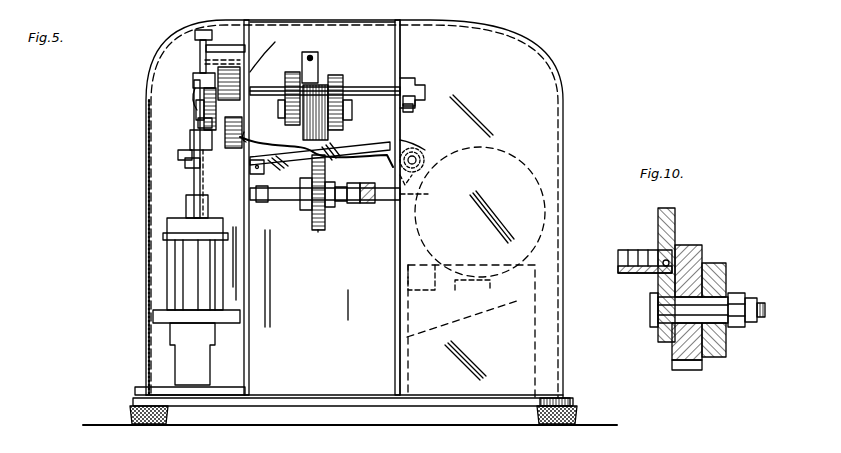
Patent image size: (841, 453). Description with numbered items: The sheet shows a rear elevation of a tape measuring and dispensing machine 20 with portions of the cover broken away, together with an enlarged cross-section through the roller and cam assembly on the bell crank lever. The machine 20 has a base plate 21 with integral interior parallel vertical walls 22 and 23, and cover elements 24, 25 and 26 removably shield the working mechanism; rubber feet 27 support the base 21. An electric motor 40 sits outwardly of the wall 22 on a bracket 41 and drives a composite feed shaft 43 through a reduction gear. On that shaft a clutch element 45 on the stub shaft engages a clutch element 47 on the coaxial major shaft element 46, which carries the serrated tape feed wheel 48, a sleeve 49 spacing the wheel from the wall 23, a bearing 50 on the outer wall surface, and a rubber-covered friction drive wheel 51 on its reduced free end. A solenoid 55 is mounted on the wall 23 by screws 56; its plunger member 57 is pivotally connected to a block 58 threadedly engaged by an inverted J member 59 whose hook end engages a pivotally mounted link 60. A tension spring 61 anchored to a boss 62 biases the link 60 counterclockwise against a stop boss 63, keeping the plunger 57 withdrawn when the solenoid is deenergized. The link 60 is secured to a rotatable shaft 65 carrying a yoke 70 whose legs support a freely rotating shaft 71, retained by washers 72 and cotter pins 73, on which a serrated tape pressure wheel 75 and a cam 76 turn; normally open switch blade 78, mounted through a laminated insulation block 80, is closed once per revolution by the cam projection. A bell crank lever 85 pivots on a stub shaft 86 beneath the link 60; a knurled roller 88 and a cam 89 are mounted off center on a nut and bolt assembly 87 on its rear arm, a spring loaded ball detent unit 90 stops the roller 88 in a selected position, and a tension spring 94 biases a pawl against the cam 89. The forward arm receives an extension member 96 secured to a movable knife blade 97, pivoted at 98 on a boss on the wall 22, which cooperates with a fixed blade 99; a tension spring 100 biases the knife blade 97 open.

In FIG. 5, the machine 20 is at (105, 285).
In FIG. 5, the base plate 21 is at (520, 395).
In FIG. 5, the vertical wall 22 is at (400, 62).
In FIG. 5, the vertical wall 23 is at (250, 358).
In FIG. 5, the cover element 24 is at (545, 92).
In FIG. 5, the cover element 25 is at (385, 36).
In FIG. 5, the cover element 26 is at (146, 177).
In FIG. 5, the rubber feet 27 is at (133, 403).
In FIG. 5, the electric motor 40 is at (535, 173).
In FIG. 5, the bracket 41 is at (488, 300).
In FIG. 5, the composite feed shaft 43 is at (350, 215).
In FIG. 5, the clutch element 45 is at (412, 196).
In FIG. 5, the major shaft element 46 is at (333, 207).
In FIG. 5, the clutch element 47 is at (355, 205).
In FIG. 5, the tape feed wheel 48 is at (320, 232).
In FIG. 5, the sleeve 49 is at (312, 205).
In FIG. 5, the bearing 50 is at (200, 198).
In FIG. 5, the friction drive wheel 51 is at (248, 210).
In FIG. 5, the solenoid 55 is at (178, 256).
In FIG. 5, the screws 56 is at (236, 285).
In FIG. 5, the plunger member 57 is at (186, 207).
In FIG. 5, the block 58 is at (190, 138).
In FIG. 5, the inverted J member 59 is at (192, 96).
In FIG. 5, the link 60 is at (193, 80).
In FIG. 5, the tension spring 61 is at (206, 48).
In FIG. 5, the boss 62 is at (197, 36).
In FIG. 5, the stop boss 63 is at (205, 62).
In FIG. 5, the rotatable shaft 65 is at (385, 80).
In FIG. 5, the yoke 70 is at (335, 75).
In FIG. 5, the shaft 71 is at (352, 110).
In FIG. 5, the washers 72 is at (341, 97).
In FIG. 5, the cotter pins 73 is at (378, 125).
In FIG. 5, the tape pressure wheel 75 is at (283, 165).
In FIG. 5, the cam 76 is at (292, 100).
In FIG. 5, the switch blade 78 is at (318, 62).
In FIG. 5, the laminated insulation block 80 is at (308, 52).
In FIG. 10, the bell crank lever 85 is at (675, 218).
In FIG. 5, the stub shaft 86 is at (178, 153).
In FIG. 5, the nut and bolt assembly 87 is at (182, 163).
In FIG. 10, the nut and bolt assembly 87 is at (752, 290).
In FIG. 10, the roller 88 is at (695, 260).
In FIG. 10, the cam 89 is at (726, 272).
In FIG. 10, the spring loaded ball detent unit 90 is at (648, 248).
In FIG. 5, the tension spring 94 is at (196, 110).
In FIG. 5, the extension member 96 is at (288, 198).
In FIG. 5, the knife blade 97 is at (355, 147).
In FIG. 5, the pivot 98 is at (418, 163).
In FIG. 5, the fixed blade 99 is at (376, 207).
In FIG. 5, the tension spring 100 is at (198, 120).